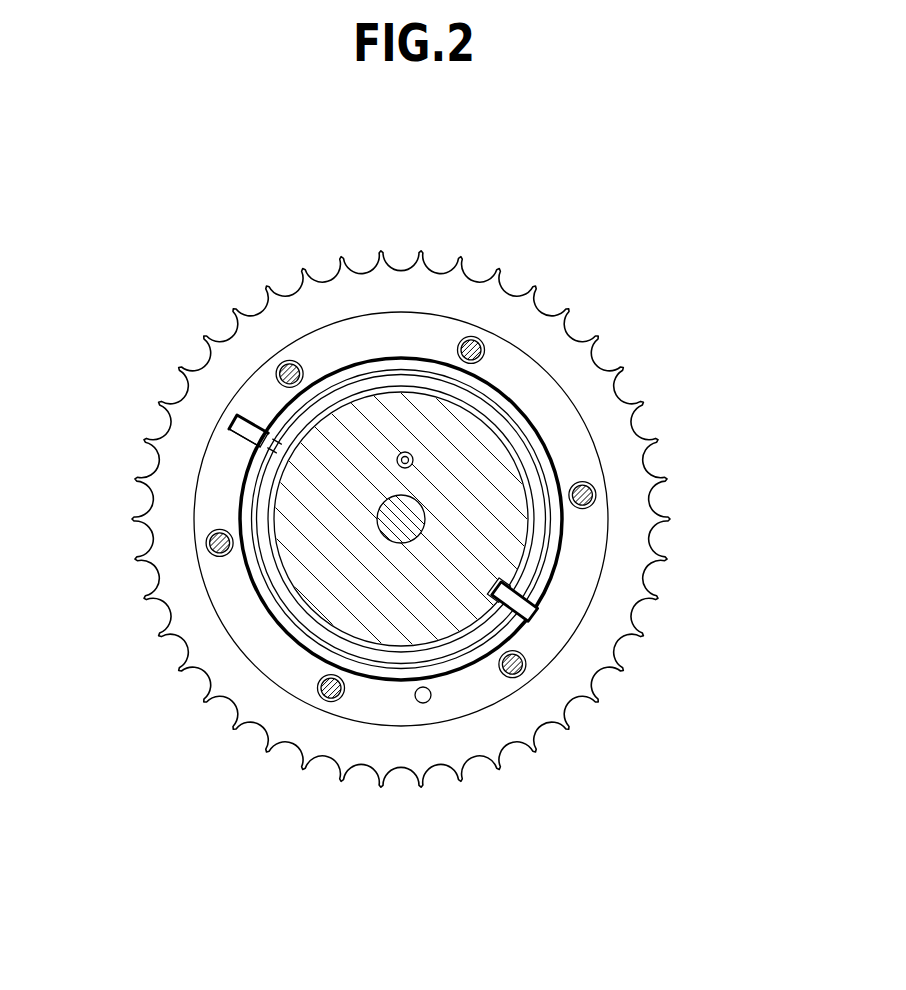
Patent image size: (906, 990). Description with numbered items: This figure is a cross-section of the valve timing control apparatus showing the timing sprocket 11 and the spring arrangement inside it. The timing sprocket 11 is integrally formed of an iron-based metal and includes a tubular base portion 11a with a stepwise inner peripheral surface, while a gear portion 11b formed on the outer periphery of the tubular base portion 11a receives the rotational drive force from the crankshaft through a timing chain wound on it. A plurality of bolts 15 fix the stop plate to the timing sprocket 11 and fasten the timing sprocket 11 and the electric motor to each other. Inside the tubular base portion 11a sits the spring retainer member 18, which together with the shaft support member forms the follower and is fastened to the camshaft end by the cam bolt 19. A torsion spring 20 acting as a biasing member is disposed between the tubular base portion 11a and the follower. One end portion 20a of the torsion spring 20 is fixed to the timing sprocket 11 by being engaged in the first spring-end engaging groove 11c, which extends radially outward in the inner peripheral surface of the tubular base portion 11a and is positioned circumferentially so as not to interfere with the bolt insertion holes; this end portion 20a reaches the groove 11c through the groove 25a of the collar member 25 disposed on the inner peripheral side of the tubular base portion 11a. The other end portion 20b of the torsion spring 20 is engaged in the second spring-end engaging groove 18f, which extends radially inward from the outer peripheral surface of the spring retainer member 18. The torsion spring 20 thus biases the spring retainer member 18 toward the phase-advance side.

The timing sprocket 11 is at (420, 519).
The tubular base portion 11a is at (576, 626).
The gear portion 11b is at (718, 557).
The first spring-end engaging groove 11c is at (229, 418).
The bolts 15 is at (288, 362).
The spring retainer member 18 is at (400, 527).
The second spring-end engaging groove 18f is at (479, 566).
The cam bolt 19 is at (399, 516).
The torsion spring 20 is at (347, 509).
The one end portion of torsion spring 20a is at (258, 420).
The other end portion of torsion spring 20b is at (502, 594).
The collar member 25 is at (300, 555).
The groove of collar member 25a is at (240, 438).